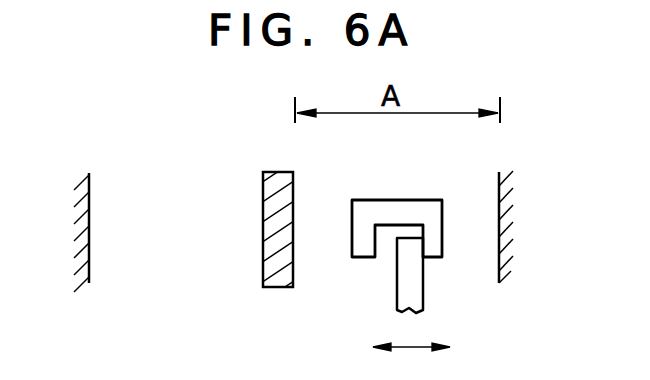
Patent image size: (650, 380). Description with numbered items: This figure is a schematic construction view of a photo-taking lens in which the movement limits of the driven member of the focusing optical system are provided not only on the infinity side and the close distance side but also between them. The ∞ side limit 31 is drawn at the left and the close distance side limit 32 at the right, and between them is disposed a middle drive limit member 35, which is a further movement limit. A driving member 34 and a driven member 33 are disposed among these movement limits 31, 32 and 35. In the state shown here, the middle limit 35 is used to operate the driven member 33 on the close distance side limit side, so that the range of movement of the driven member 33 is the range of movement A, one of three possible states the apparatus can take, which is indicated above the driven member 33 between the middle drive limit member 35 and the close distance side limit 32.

The ∞ side limit 31 is at (90, 188).
The close distance side limit 32 is at (503, 182).
The driven member 33 is at (402, 208).
The driving member 34 is at (418, 285).
The middle drive limit member 35 is at (280, 176).